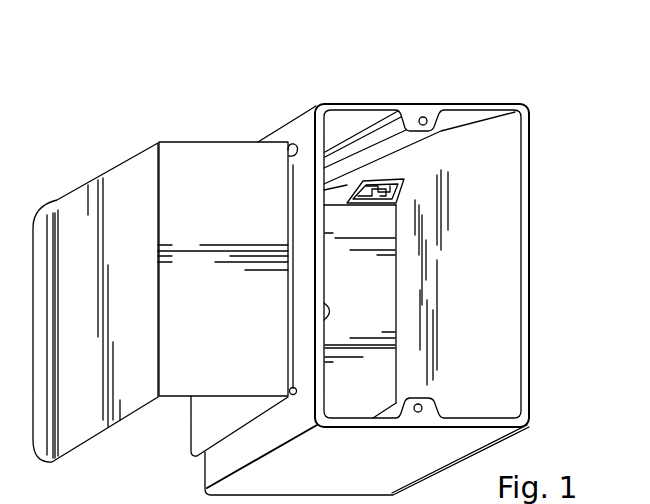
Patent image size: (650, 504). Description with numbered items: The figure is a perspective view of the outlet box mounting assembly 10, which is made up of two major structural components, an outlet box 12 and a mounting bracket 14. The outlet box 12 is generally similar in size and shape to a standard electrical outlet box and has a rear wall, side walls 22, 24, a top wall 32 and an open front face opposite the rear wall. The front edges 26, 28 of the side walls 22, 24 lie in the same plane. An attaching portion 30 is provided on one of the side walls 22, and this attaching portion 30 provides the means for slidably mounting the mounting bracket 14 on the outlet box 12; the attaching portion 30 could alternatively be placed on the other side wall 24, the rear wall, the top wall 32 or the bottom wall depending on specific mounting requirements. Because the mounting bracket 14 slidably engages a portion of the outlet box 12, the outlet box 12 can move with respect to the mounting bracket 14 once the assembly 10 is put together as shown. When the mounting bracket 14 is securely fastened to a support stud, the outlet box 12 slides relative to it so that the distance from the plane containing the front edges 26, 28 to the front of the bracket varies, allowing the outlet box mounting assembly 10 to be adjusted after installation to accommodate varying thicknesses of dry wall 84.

The outlet box mounting assembly 10 is at (388, 66).
The outlet box 12 is at (523, 95).
The mounting bracket 14 is at (95, 296).
The side wall 22 is at (272, 246).
The side wall 24 is at (498, 247).
The front edge 26 is at (321, 128).
The front edge 28 is at (529, 157).
The attaching portion 30 is at (223, 269).
The top wall 32 is at (465, 122).
The dry wall 84 is at (371, 475).